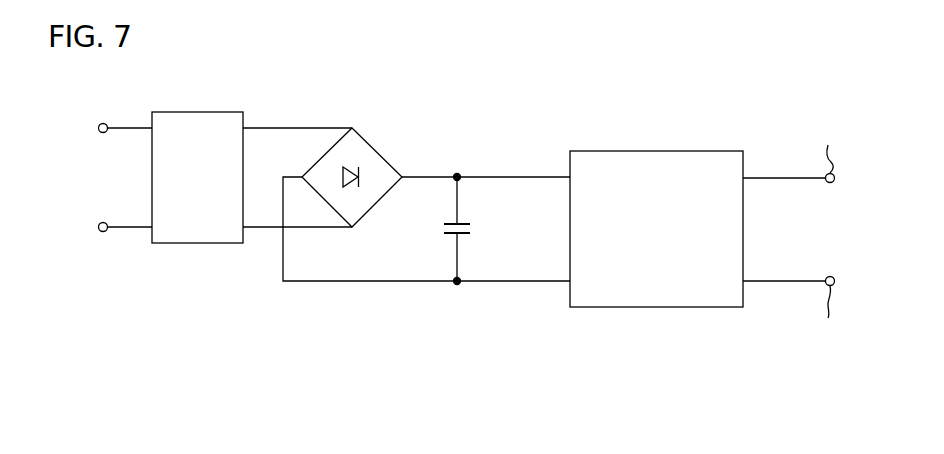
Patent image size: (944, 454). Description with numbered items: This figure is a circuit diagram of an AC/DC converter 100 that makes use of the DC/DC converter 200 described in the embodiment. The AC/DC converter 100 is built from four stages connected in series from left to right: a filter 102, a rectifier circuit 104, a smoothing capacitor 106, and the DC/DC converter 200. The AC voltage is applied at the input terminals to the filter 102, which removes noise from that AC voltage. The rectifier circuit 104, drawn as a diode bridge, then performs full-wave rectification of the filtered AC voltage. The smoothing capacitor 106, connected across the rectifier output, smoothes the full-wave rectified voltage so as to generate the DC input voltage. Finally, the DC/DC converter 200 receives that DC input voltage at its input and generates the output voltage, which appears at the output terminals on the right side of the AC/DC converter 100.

The AC/DC converter 100 is at (477, 432).
The filter 102 is at (192, 111).
The rectifier circuit 104 is at (398, 127).
The smoothing capacitor 106 is at (480, 227).
The DC/DC converter 200 is at (660, 310).